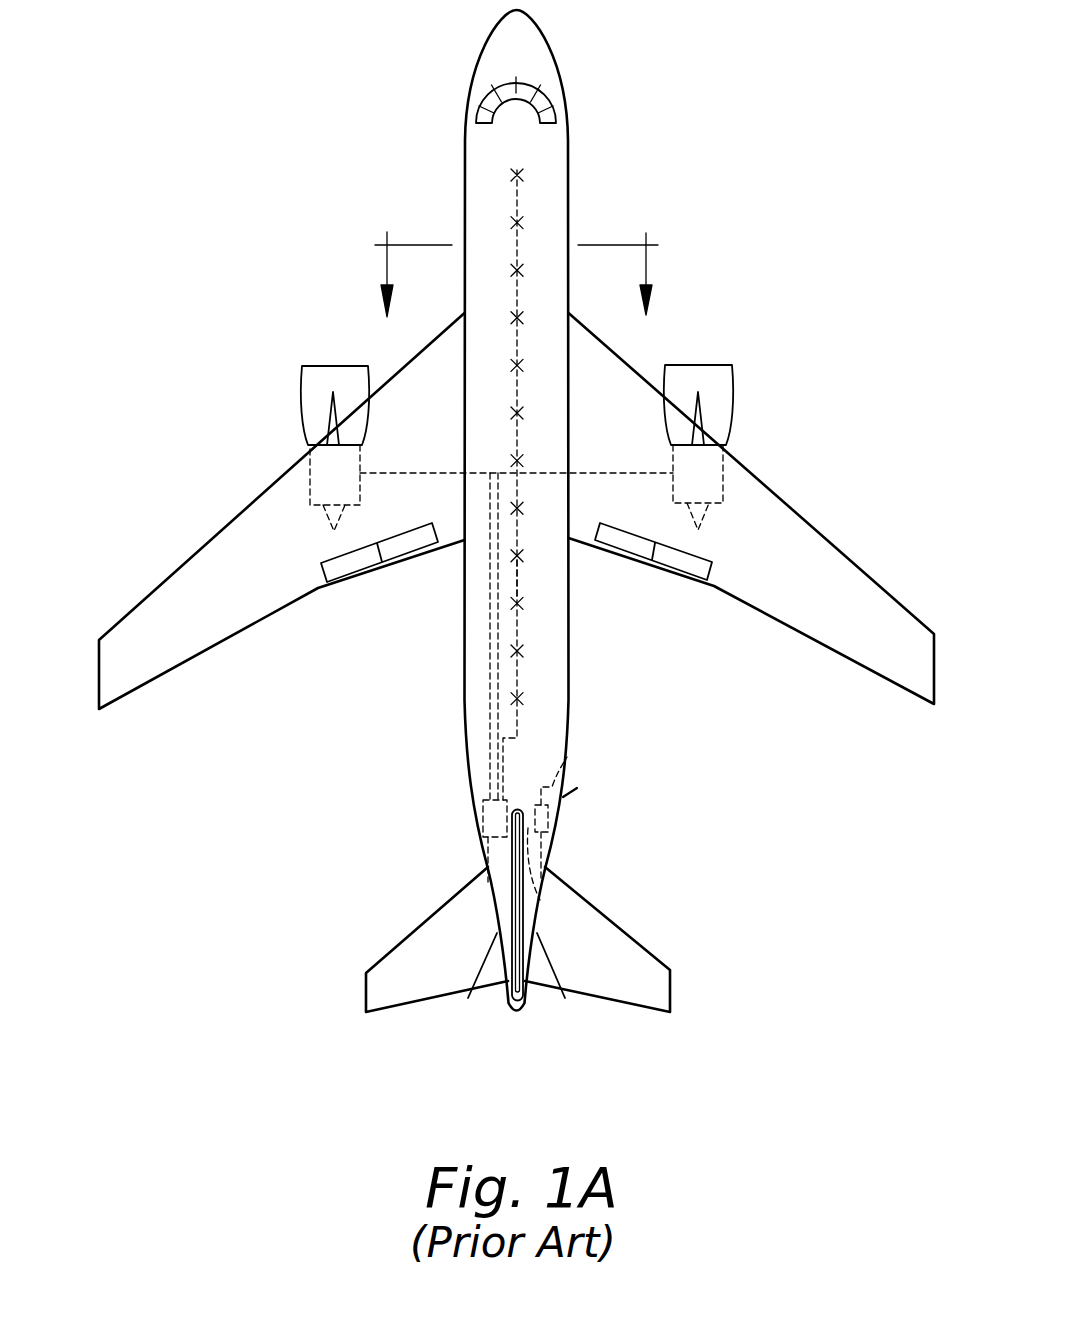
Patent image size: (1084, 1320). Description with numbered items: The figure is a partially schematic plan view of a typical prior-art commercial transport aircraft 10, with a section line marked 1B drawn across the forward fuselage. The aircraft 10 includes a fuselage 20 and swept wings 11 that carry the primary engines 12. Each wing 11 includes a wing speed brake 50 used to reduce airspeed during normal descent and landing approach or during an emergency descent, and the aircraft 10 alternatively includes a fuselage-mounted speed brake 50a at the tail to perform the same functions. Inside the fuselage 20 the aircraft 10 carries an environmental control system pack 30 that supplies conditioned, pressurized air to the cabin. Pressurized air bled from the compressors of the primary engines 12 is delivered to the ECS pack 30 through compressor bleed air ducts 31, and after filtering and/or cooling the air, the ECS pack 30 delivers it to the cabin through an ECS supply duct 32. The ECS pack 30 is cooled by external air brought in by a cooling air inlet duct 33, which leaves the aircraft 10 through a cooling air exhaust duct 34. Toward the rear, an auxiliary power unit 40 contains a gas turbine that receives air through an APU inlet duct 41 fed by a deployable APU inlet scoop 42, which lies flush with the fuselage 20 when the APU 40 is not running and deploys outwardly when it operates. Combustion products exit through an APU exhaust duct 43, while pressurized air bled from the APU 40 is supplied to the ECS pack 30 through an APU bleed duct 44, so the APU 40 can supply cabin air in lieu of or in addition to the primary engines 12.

The commercial transport aircraft 10 is at (787, 230).
The swept wings 11 is at (197, 553).
The primary engines 12 is at (322, 365).
The fuselage 20 is at (464, 172).
The section line 1B is at (516, 274).
The environmental control system (ECS) pack 30 is at (483, 817).
The compressor bleed air ducts 31 is at (430, 473).
The ECS supply duct 32 is at (517, 580).
The cooling air inlet duct 33 is at (483, 800).
The cooling air exhaust duct 34 is at (477, 855).
The auxiliary power unit (APU) 40 is at (548, 815).
The APU inlet duct 41 is at (550, 787).
The deployable APU inlet scoop 42 is at (580, 785).
The APU exhaust duct 43 is at (540, 852).
The APU bleed duct 44 is at (540, 880).
The wing speed brake 50 is at (352, 565).
The fuselage-mounted speed brake 50a is at (565, 995).